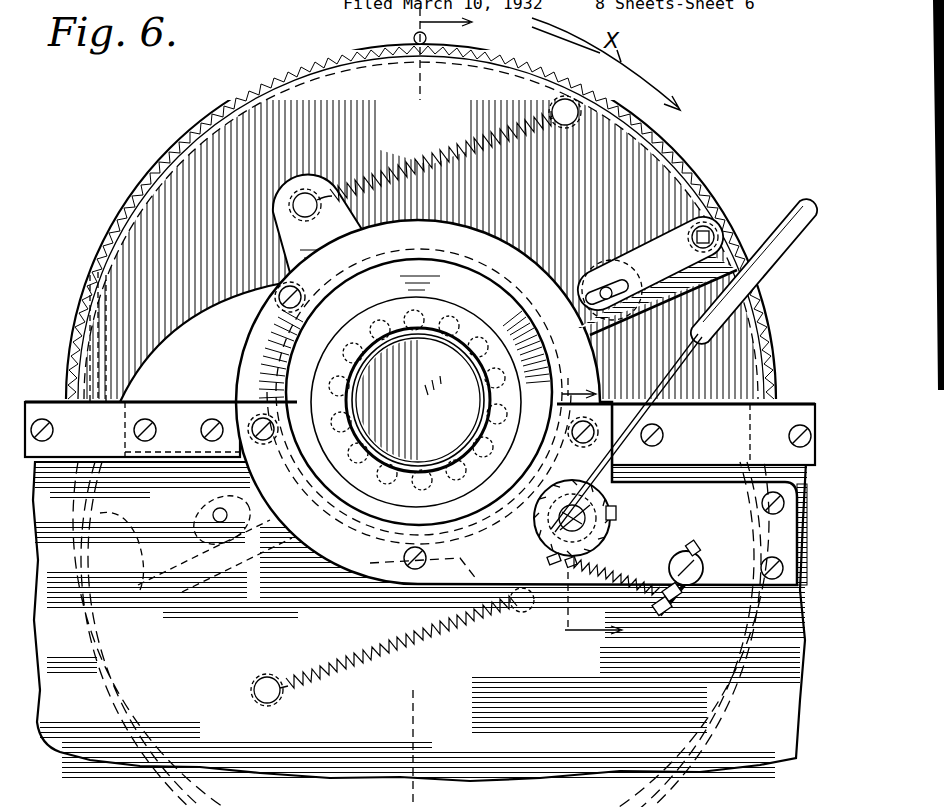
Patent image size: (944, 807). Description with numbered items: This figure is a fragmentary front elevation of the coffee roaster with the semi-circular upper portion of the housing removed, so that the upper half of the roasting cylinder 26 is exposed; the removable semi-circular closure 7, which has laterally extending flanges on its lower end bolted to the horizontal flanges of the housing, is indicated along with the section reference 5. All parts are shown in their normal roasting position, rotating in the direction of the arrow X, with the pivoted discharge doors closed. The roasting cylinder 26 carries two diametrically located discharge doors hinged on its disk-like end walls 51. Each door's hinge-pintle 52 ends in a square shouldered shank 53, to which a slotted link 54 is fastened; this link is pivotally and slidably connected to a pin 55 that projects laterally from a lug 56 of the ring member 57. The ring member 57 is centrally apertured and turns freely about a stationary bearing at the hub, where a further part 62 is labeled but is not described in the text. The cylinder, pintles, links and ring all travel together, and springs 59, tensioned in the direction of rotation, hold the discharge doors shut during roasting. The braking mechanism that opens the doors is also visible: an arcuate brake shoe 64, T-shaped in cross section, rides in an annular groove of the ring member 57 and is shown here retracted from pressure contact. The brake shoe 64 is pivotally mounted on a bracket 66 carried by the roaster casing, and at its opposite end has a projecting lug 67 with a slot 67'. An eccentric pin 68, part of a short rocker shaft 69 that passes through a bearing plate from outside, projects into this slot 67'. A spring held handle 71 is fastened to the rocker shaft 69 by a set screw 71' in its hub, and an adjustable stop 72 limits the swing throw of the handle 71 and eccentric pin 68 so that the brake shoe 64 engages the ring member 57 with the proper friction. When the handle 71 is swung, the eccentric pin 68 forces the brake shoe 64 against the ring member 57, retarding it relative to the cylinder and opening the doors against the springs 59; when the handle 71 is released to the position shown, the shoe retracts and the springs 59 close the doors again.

The section line 5- 5 is at (425, 54).
The removable semi-circular closure 7 is at (592, 516).
The roasting cylinder 26 is at (668, 162).
The disk-like end walls 51 is at (237, 130).
The hinge-pintles 52 is at (690, 228).
The square shouldered shanks 53 is at (712, 228).
The slotted link 54 is at (633, 245).
The pin 55 is at (632, 281).
The lug 56 is at (582, 290).
The ring member 57 is at (490, 300).
The springs 59 is at (420, 150).
The bearing 62 is at (438, 466).
The brake shoe 64 is at (415, 258).
The bracket 66 is at (225, 342).
The projecting lug 67 is at (636, 501).
The slot 67' is at (610, 533).
The eccentric pin 68 is at (560, 532).
The short rocker shaft 69 is at (587, 532).
The spring held handle 71 is at (754, 257).
The set screw 71' is at (626, 436).
The adjustable stop 72 is at (704, 545).